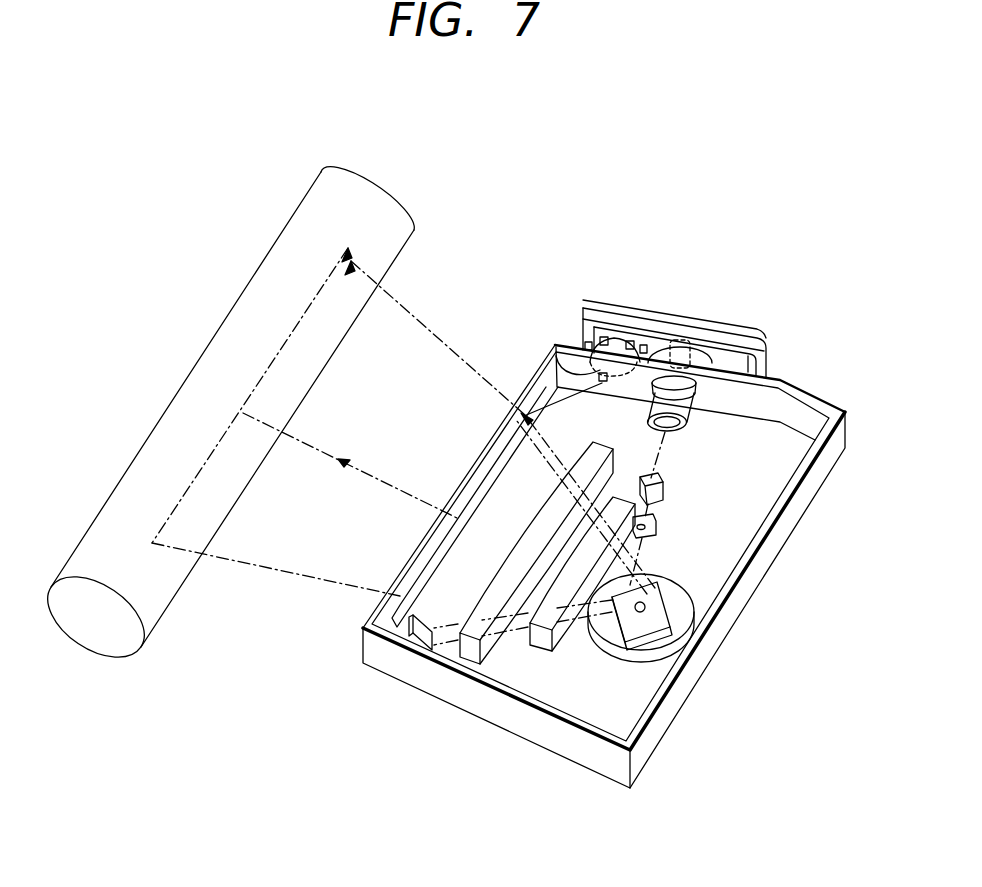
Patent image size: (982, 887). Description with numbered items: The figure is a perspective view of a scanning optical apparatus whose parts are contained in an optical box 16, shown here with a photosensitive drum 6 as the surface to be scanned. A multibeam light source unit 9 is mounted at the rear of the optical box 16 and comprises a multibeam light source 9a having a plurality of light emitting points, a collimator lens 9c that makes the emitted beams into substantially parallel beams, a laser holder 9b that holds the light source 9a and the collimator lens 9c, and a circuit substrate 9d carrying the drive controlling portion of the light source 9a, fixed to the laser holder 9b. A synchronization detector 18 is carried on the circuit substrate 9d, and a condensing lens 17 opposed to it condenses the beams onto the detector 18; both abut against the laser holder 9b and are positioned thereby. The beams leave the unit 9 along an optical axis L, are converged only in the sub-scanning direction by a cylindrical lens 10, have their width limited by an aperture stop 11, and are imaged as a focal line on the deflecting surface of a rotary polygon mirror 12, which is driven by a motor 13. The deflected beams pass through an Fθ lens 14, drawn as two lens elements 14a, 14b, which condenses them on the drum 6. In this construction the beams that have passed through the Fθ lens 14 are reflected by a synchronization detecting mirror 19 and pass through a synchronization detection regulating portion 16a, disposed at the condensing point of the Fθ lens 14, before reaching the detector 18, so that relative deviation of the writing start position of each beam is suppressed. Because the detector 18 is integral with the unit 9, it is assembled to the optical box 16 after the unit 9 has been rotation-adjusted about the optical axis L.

The photosensitive drum 6 is at (297, 233).
The multibeam light source unit 9 is at (653, 327).
The multibeam light source 9a is at (687, 330).
The laser holder 9b is at (753, 358).
The collimator lens 9c is at (670, 427).
The circuit substrate 9d is at (747, 330).
The cylindrical lens 10 is at (660, 500).
The aperture stop 11 is at (652, 533).
The rotary polygon mirror 12 is at (660, 630).
The polygon motor 13 is at (640, 650).
The Fθ lens 14 is at (405, 793).
The first scanning lens 14a is at (540, 645).
The second scanning lens 14b is at (465, 652).
The optical box 16 is at (795, 517).
The synchronization detection regulating portion 16a is at (588, 377).
The condensing lens 17 is at (600, 338).
The synchronization detector 18 is at (617, 342).
The synchronization detecting mirror 19 is at (418, 636).
The optical axis L is at (663, 457).